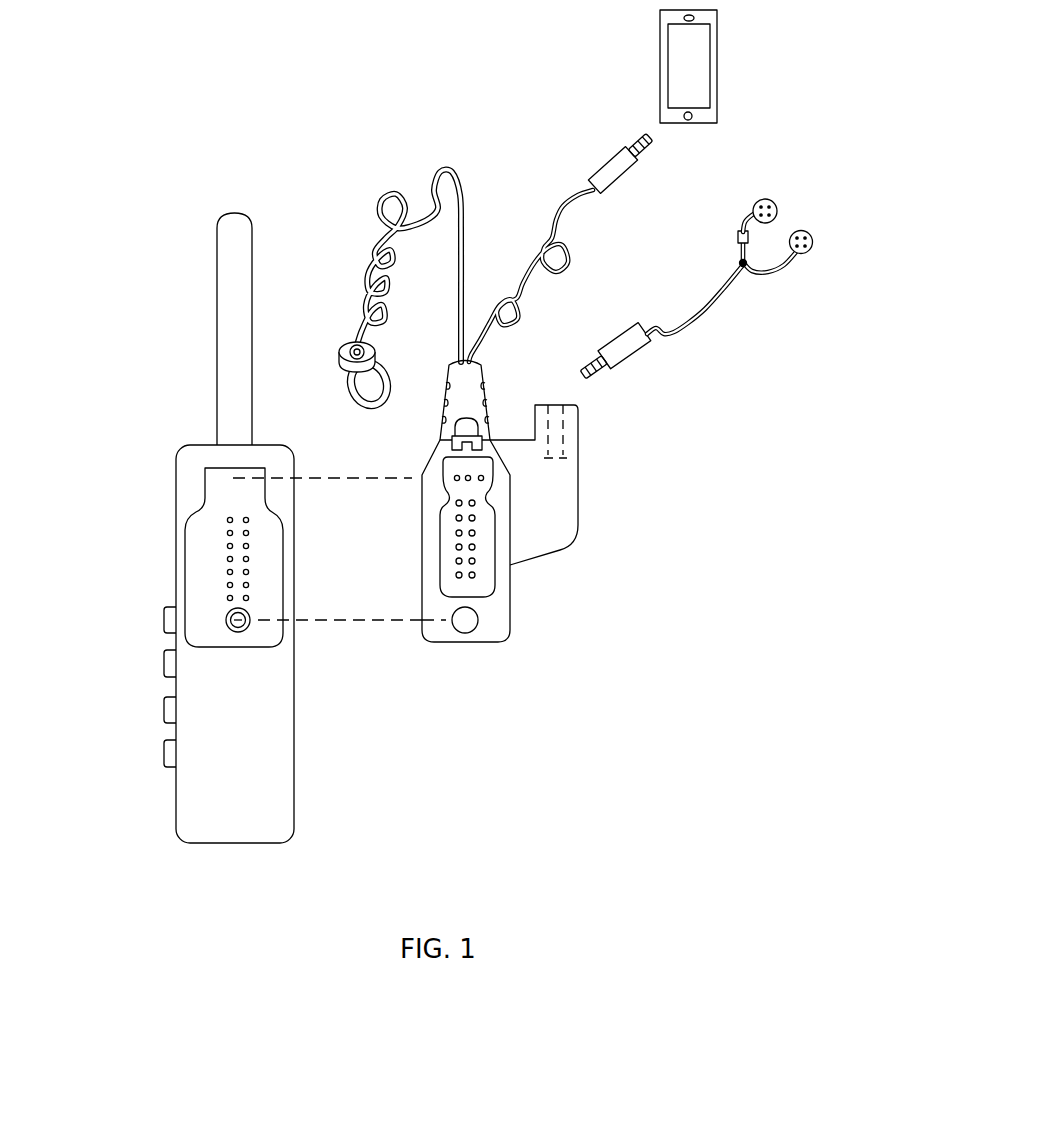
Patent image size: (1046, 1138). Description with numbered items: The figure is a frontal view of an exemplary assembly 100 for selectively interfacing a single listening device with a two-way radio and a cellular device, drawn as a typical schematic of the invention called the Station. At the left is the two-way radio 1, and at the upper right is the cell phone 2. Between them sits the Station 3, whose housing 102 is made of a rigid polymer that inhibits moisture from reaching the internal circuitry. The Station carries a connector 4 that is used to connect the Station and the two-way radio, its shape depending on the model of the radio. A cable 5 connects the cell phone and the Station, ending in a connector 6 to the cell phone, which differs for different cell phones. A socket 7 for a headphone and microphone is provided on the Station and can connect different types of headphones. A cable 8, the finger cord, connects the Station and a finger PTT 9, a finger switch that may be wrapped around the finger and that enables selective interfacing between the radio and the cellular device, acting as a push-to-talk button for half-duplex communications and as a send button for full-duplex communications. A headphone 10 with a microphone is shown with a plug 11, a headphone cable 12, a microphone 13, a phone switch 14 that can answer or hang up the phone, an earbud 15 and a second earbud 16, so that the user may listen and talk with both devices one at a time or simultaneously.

The two-way radio 1 is at (114, 587).
The cell phone 2 is at (758, 68).
The Station 3 is at (492, 414).
The connector 4 is at (437, 544).
The cable 5 is at (571, 257).
The connector to a cell phone 6 is at (633, 167).
The socket for a headphone and microphone 7 is at (578, 419).
The cable 8 is at (373, 246).
The finger PTT 9 is at (339, 345).
The headphone with a microphone 10 is at (728, 283).
The earphone plug 11 is at (626, 358).
The cable of the headphone 12 is at (715, 298).
The microphone 13 is at (737, 237).
The phone switch 14 is at (739, 255).
The earbud 15 is at (769, 200).
The second earbud 16 is at (814, 238).
The assembly 100 is at (182, 494).
The housing 102 is at (512, 611).